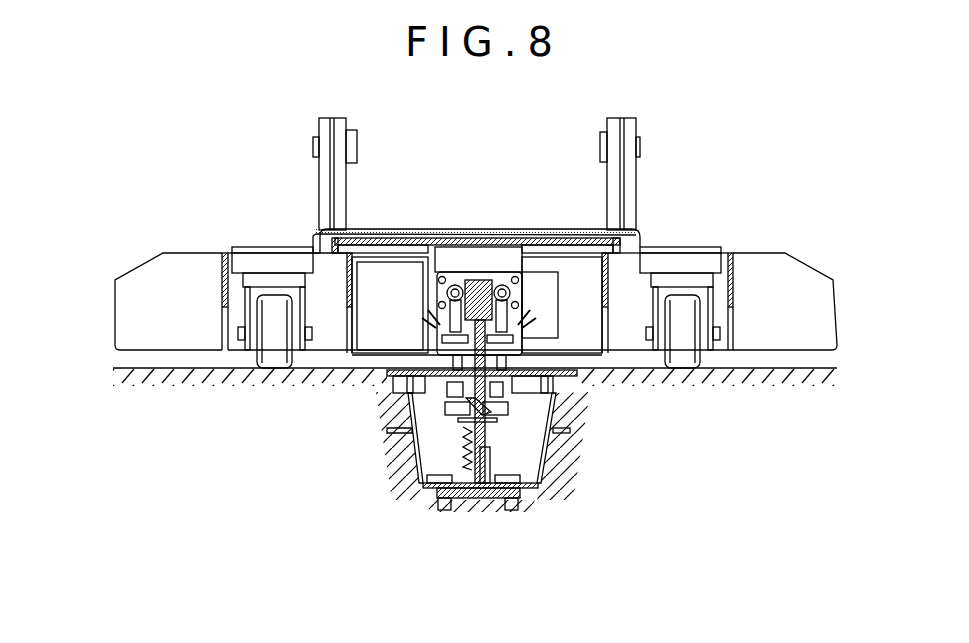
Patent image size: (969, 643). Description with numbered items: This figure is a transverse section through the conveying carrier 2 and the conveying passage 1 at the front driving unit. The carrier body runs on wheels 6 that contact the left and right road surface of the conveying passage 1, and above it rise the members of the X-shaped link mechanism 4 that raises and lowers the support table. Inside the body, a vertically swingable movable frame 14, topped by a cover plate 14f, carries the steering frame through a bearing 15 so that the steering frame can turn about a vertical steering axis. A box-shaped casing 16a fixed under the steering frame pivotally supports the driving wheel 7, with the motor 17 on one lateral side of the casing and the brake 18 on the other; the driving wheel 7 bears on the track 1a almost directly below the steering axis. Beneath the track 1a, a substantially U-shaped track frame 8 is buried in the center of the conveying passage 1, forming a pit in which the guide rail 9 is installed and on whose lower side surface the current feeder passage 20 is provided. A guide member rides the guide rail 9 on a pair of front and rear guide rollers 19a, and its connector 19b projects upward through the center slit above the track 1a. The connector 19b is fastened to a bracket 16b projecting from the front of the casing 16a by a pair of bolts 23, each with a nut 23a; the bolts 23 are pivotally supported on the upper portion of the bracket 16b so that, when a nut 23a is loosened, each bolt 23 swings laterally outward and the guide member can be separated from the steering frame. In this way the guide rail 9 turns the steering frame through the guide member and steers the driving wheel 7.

The conveying passage 1 is at (193, 363).
The track 1a is at (583, 372).
The conveying carrier 2 is at (212, 243).
The X-shaped link mechanism 4 is at (323, 183).
The wheels 6 is at (275, 360).
The driving wheel 7 is at (412, 415).
The track frame 8 is at (541, 480).
The guide rail 9 is at (485, 498).
The movable frame 14 is at (449, 233).
The cover plate 14f is at (363, 230).
The bearing 15 is at (557, 240).
The box-shaped casing 16a is at (522, 258).
The bracket 16b is at (466, 305).
The motor 17 is at (392, 272).
The brake 18 is at (552, 307).
The guide rollers 19a is at (446, 416).
The connector 19b is at (397, 383).
The current feeder passage 20 is at (468, 495).
The bolts 23 is at (440, 315).
The nut 23a is at (430, 344).